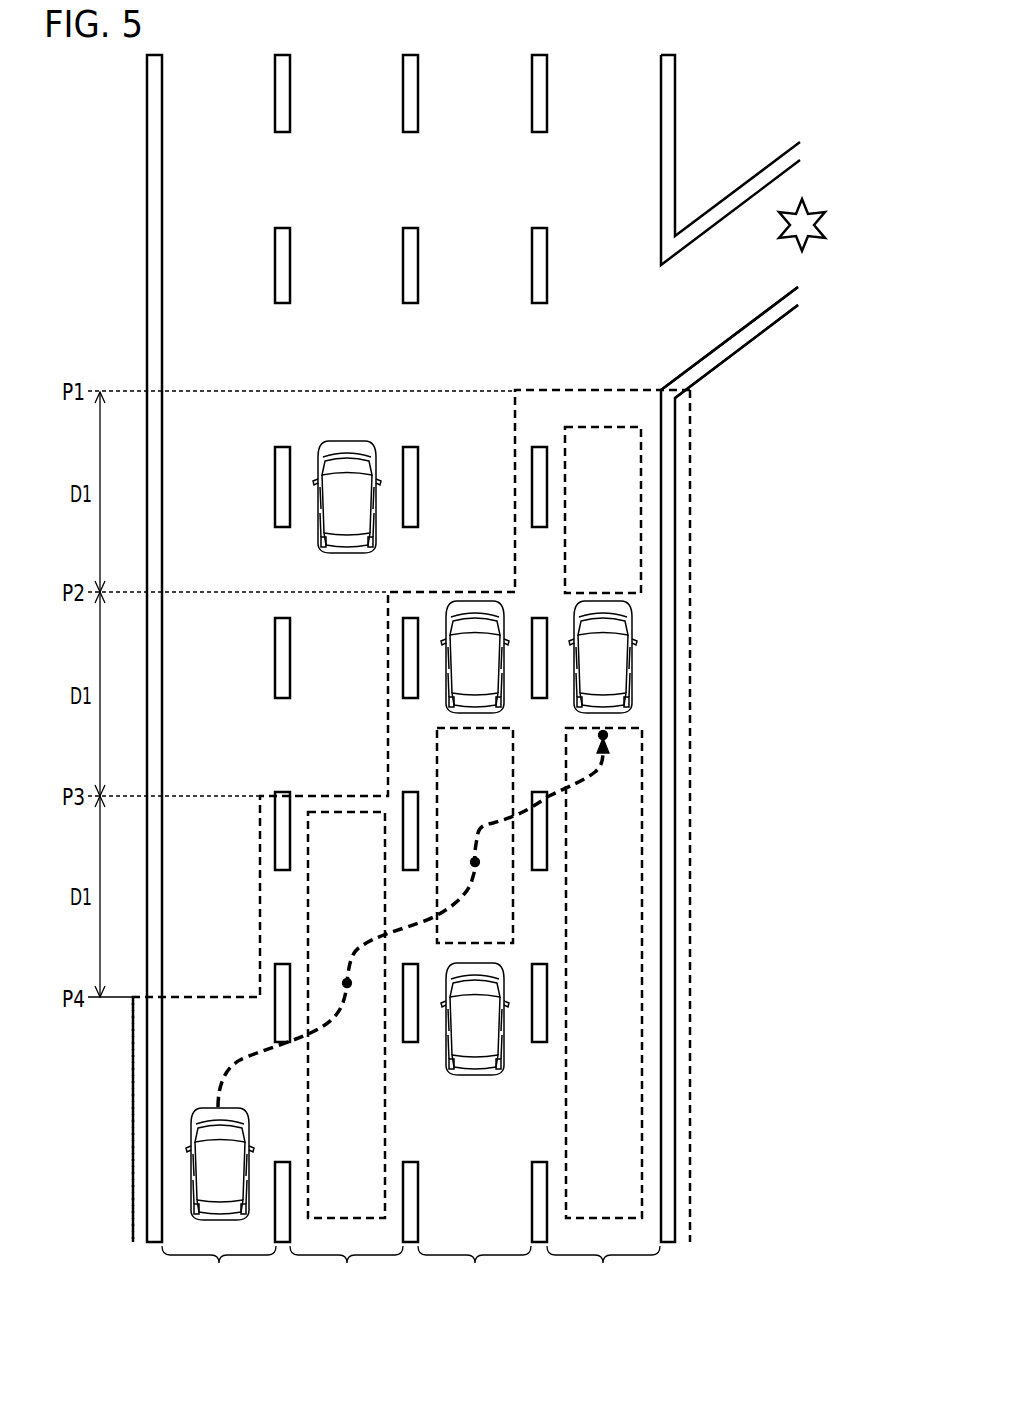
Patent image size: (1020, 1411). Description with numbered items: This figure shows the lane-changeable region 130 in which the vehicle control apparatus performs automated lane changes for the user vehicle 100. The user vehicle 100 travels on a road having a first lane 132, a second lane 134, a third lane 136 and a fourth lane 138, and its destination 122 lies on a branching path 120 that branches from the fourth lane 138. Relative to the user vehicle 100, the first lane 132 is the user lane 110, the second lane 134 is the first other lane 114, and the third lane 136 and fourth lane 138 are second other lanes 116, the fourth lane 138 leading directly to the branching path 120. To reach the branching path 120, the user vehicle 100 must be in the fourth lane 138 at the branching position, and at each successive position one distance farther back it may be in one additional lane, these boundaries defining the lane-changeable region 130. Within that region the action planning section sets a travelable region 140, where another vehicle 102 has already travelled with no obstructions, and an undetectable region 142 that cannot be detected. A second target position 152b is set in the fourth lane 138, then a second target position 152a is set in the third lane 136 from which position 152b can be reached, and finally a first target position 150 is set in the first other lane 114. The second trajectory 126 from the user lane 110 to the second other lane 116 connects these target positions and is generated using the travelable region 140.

The user vehicle 100 is at (195, 1160).
The another vehicle 102 is at (327, 545).
The user lane 110 is at (218, 1304).
The first other lane 114 is at (346, 1304).
The second other lane 116 is at (538, 1304).
The branching path 120 is at (768, 330).
The destination 122 is at (782, 213).
The second trajectory 126 is at (420, 927).
The lane-changeable region 130 is at (130, 1082).
The first lane 132 is at (219, 1281).
The second lane 134 is at (346, 1281).
The third lane 136 is at (523, 1281).
The fourth lane 138 is at (603, 1269).
The travelable region 140 is at (432, 765).
The undetectable region 142 is at (641, 557).
The first target position 150 is at (347, 983).
The second target position 152a is at (475, 862).
The second target position 152b is at (607, 737).